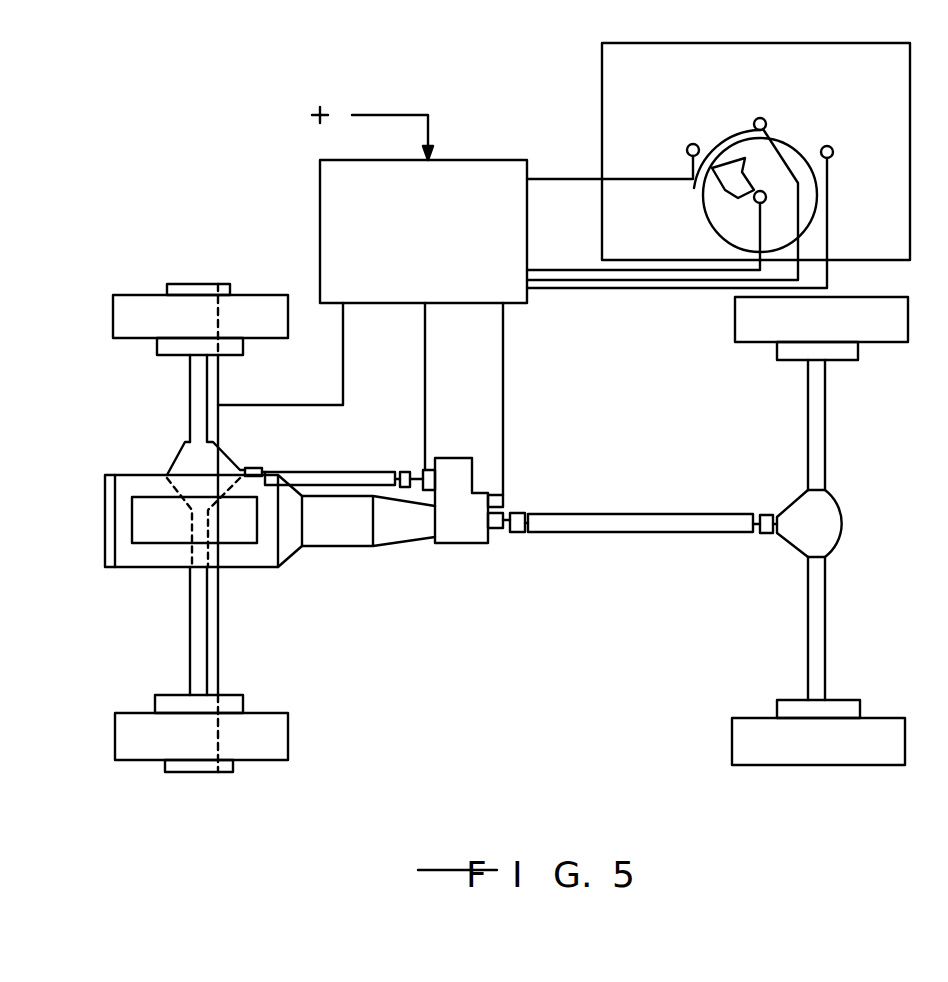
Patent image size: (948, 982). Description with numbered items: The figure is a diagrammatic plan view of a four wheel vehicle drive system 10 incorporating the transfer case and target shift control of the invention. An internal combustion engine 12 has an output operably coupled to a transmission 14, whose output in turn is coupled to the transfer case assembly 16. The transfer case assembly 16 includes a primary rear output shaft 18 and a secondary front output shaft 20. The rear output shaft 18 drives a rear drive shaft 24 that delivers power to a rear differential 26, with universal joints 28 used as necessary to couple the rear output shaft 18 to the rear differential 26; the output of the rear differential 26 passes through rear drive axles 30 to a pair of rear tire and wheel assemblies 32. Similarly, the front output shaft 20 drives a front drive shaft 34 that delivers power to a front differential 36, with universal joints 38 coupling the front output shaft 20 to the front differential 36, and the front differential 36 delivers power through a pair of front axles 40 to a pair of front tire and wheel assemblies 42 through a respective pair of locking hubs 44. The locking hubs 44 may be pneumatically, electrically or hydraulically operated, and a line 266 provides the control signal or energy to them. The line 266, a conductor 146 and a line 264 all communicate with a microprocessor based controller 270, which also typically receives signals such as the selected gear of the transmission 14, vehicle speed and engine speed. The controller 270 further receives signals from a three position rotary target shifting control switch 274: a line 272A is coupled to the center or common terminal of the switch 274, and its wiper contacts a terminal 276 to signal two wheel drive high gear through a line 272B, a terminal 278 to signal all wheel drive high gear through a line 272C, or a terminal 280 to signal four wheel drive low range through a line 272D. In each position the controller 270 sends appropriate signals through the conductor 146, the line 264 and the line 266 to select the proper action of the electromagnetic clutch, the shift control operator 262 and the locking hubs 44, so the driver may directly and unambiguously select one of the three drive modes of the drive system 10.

The vehicle drive system 10 is at (592, 762).
The internal combustion engine 12 is at (247, 567).
The transmission 14 is at (328, 538).
The transfer case assembly 16 is at (455, 578).
The rear output shaft 18 is at (498, 543).
The front output shaft 20 is at (430, 458).
The rear drive shaft 24 is at (612, 514).
The rear differential 26 is at (822, 532).
The universal joints 28 is at (513, 533).
The rear drive axles 30 is at (825, 468).
The rear tire and wheel assemblies 32 is at (880, 332).
The front drive shaft 34 is at (356, 470).
The front differential 36 is at (175, 458).
The universal joints 38 is at (250, 467).
The front axles 40 is at (208, 384).
The front tire and wheel assemblies 42 is at (127, 325).
The locking hubs 44 is at (198, 284).
The conductor 146 is at (425, 360).
The shift control operator 262 is at (505, 500).
The line 264 is at (507, 363).
The line 266 is at (343, 322).
The controller 270 is at (456, 249).
The line 272A is at (557, 268).
The line 272B is at (557, 178).
The line 272C is at (580, 282).
The line 272D is at (668, 290).
The target shifting control switch 274 is at (712, 228).
The terminal 276 is at (687, 157).
The terminal 278 is at (703, 178).
The terminal 280 is at (833, 153).